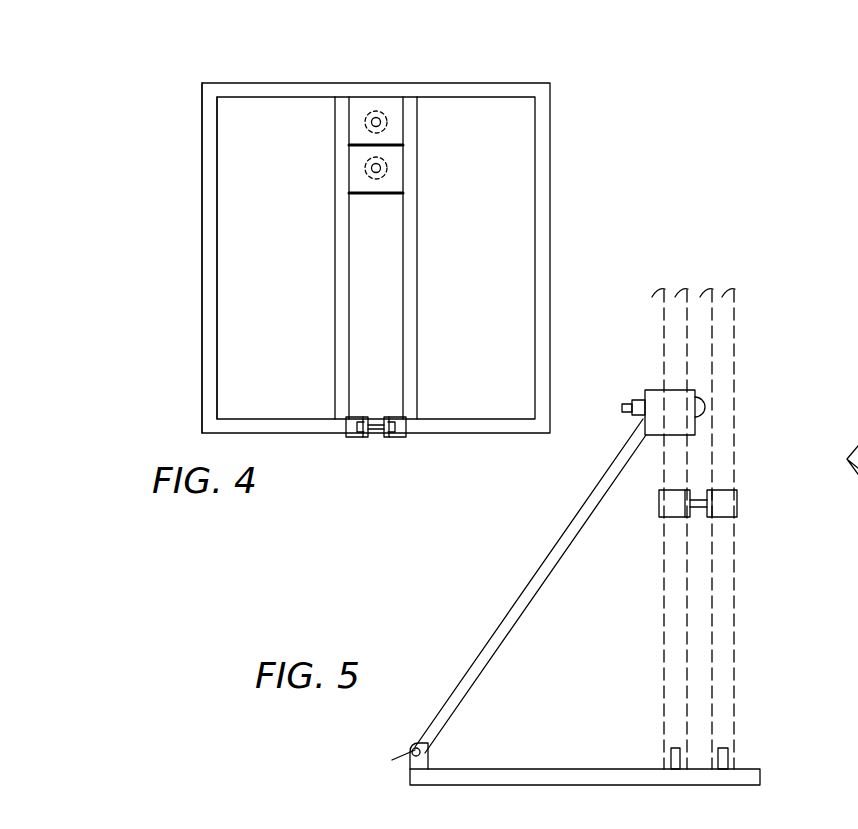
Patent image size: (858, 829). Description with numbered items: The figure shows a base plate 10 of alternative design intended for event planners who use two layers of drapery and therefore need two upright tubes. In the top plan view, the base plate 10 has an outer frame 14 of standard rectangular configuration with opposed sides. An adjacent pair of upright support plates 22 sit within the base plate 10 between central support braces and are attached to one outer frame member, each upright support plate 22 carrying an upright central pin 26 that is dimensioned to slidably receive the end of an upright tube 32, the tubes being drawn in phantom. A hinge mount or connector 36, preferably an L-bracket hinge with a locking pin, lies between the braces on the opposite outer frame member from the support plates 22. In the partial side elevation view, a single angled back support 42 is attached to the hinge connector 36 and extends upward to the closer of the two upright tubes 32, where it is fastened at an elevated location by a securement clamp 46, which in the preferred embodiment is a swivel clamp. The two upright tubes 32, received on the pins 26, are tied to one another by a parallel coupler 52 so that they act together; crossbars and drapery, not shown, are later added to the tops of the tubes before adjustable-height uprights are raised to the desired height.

In FIG. 4, the base plate 10 is at (556, 63).
In FIG. 4, the outer frame 14 is at (202, 153).
In FIG. 5, the outer frame 14 is at (563, 785).
In FIG. 4, the upright support mount or plate 22 is at (393, 136).
In FIG. 4, the central pin 26 is at (365, 122).
In FIG. 5, the central pin 26 is at (677, 748).
In FIG. 4, the upright tube 32 is at (372, 110).
In FIG. 5, the upright tube 32 is at (723, 318).
In FIG. 4, the hinge mount or connector 36 is at (375, 438).
In FIG. 5, the hinge mount or connector 36 is at (412, 748).
In FIG. 5, the angled back support 42 is at (547, 566).
In FIG. 5, the securement clamp 46 is at (658, 399).
In FIG. 5, the parallel coupler 52 is at (725, 508).